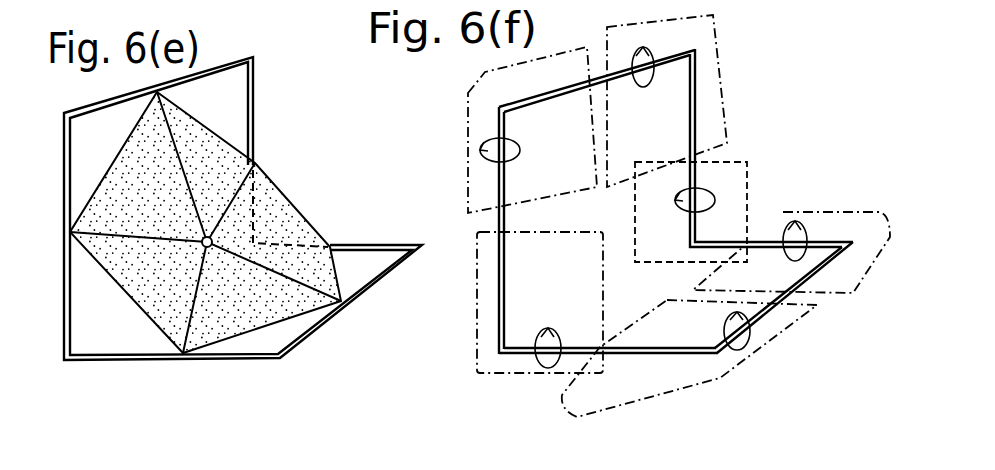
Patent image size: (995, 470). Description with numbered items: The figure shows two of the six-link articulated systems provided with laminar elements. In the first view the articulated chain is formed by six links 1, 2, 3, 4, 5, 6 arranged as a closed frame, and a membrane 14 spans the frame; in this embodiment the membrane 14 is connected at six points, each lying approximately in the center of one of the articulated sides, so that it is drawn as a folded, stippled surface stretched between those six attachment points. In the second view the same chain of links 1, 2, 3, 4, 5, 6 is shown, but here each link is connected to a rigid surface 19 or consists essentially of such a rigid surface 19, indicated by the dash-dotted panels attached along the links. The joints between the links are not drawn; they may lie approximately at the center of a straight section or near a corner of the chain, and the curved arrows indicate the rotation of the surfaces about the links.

In FIG. 6E, the membrane 14 is at (227, 155).
In FIG. 6F, the link 1 is at (695, 117).
In FIG. 6F, the link 2 is at (768, 243).
In FIG. 6F, the link 3 is at (812, 278).
In FIG. 6F, the link 4 is at (720, 377).
In FIG. 6F, the link 5 is at (500, 328).
In FIG. 6F, the link 6 is at (563, 88).
In FIG. 6F, the rigid surface 19 is at (470, 108).